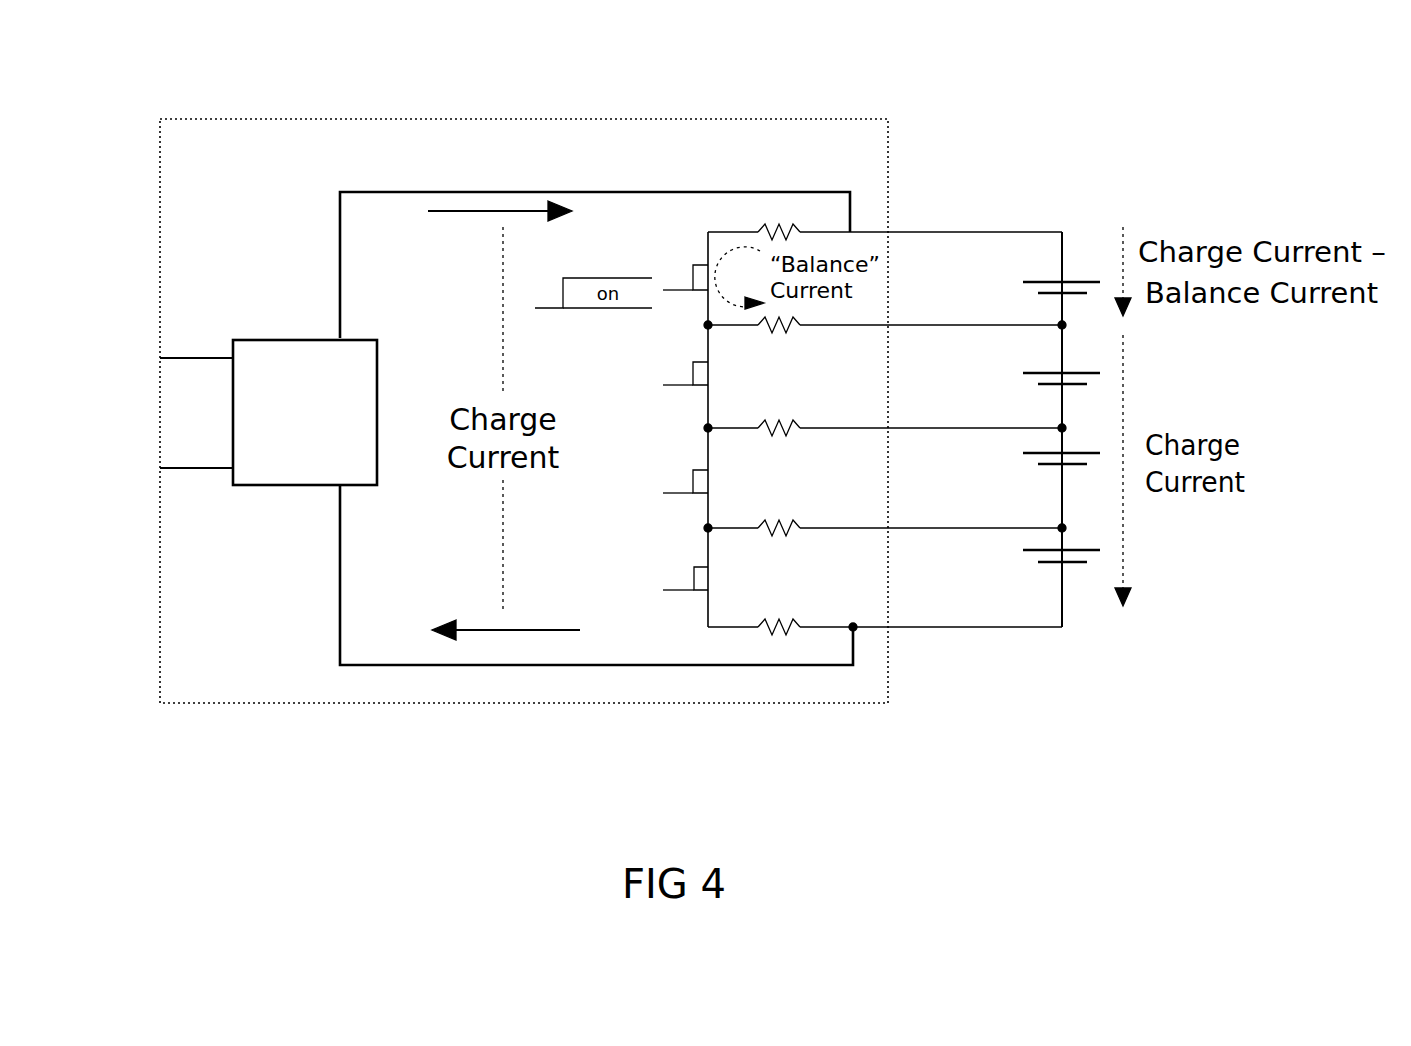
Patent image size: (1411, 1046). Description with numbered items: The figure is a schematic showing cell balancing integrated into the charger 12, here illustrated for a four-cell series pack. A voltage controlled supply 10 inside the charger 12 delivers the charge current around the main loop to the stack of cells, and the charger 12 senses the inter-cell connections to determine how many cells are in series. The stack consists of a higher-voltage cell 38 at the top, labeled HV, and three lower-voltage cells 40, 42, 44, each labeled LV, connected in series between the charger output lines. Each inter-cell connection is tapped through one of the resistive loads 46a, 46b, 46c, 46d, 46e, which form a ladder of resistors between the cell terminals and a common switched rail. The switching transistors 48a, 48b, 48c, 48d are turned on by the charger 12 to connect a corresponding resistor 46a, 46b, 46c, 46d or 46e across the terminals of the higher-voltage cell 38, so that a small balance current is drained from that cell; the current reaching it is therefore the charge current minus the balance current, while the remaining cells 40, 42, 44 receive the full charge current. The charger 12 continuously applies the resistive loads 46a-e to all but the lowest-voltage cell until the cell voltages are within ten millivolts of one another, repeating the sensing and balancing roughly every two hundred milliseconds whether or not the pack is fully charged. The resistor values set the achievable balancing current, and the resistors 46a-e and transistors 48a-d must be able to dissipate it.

The voltage controlled supply 10 is at (273, 372).
The charger 12 is at (502, 130).
The higher-voltage cell 38 is at (1068, 280).
The low voltage cell 40 is at (1093, 370).
The low voltage cell 42 is at (1090, 467).
The low voltage cell 44 is at (1098, 562).
The resistive load 46a is at (783, 225).
The resistive load 46b is at (793, 323).
The resistive load 46c is at (805, 407).
The resistive load 46d is at (800, 547).
The resistive load 46e is at (800, 632).
The switching transistor 48a is at (690, 265).
The switching transistor 48b is at (693, 365).
The switching transistor 48c is at (697, 472).
The switching transistor 48d is at (706, 600).